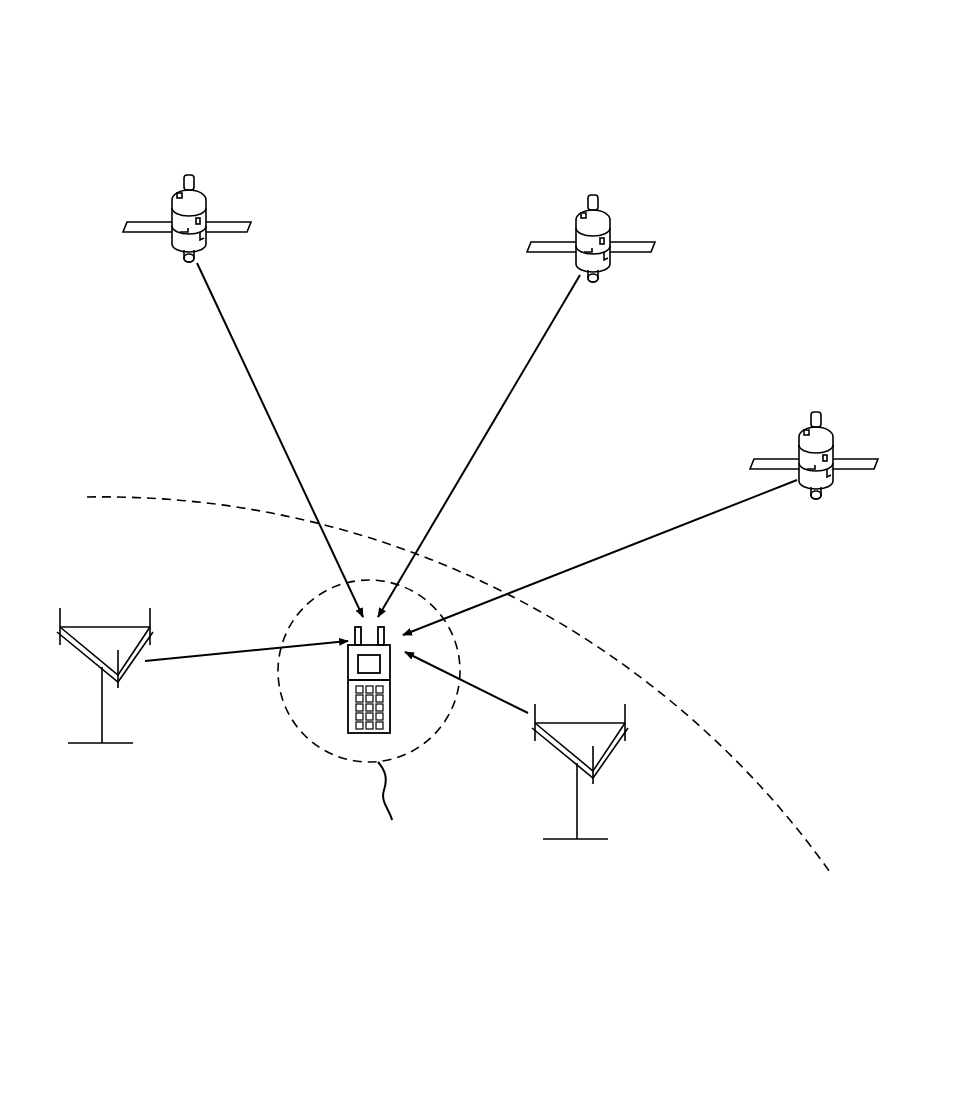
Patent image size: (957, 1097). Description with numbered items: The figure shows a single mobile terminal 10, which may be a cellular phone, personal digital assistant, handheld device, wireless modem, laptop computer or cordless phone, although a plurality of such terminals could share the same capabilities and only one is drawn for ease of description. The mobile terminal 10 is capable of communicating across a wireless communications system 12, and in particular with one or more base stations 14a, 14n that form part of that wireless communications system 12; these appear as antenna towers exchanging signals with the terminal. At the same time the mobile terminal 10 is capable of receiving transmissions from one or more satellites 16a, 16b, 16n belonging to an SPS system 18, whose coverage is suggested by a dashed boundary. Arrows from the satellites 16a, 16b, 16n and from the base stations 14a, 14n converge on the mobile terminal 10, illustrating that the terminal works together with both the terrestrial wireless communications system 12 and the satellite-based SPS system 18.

The wireless communications system 12 is at (437, 100).
The satellite 16a is at (243, 222).
The satellite 16b is at (650, 243).
The satellite 16n is at (762, 460).
The base station 14a is at (80, 650).
The base station 14n is at (606, 750).
The SPS system 18 is at (113, 487).
The mobile terminal 10 is at (348, 708).